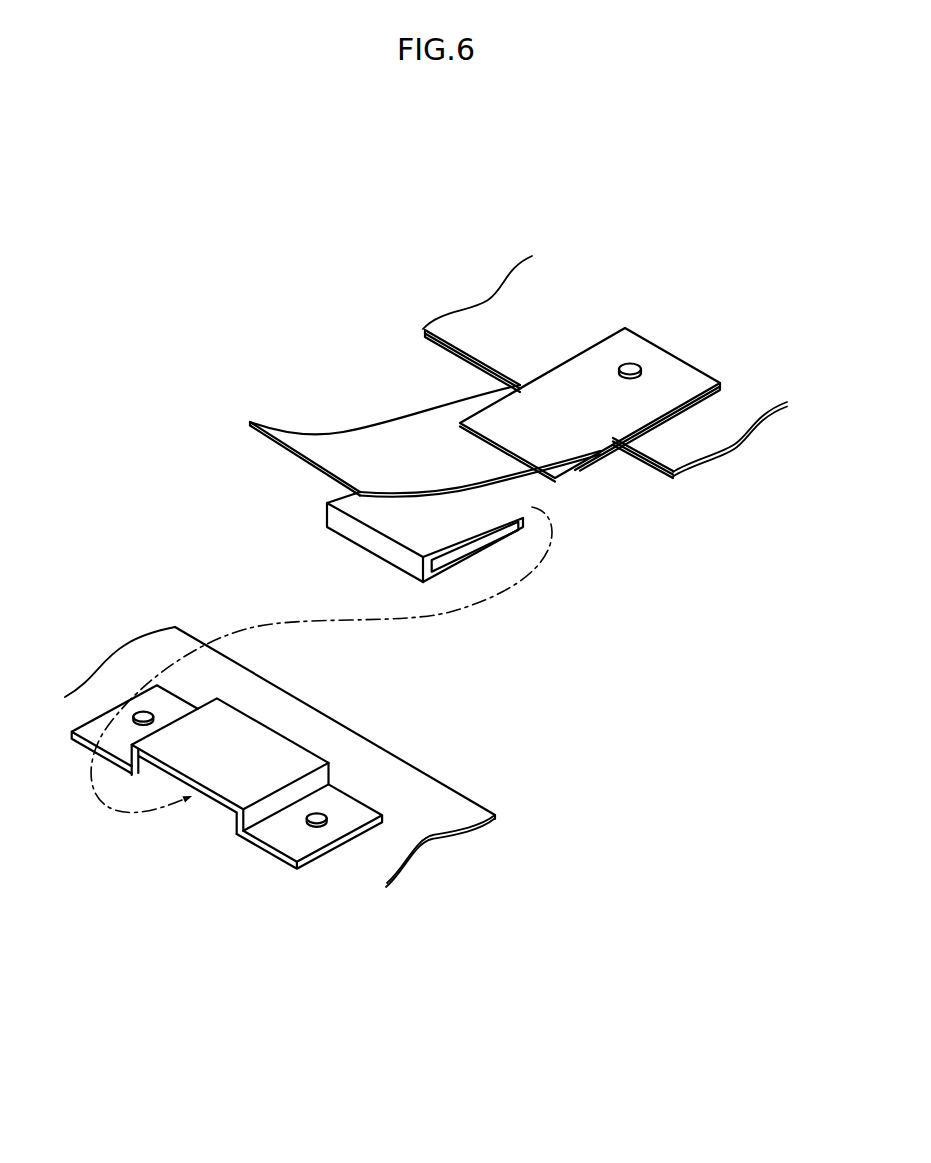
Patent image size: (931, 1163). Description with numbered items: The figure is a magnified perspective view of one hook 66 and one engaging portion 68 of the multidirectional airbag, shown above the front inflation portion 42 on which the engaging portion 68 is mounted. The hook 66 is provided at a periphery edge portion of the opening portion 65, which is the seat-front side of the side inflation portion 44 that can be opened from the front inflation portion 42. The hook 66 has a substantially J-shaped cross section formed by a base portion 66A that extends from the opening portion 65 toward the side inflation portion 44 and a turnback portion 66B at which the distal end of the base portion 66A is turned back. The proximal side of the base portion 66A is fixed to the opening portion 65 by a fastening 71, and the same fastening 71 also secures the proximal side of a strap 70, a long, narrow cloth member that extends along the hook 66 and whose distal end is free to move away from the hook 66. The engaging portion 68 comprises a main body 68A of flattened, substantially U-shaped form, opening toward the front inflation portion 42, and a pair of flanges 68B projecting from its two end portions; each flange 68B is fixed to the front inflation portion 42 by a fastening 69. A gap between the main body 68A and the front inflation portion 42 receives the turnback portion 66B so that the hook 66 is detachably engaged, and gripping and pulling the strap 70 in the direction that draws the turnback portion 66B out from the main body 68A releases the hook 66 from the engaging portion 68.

The front inflation portion 42 is at (420, 820).
The side inflation portion 44 is at (692, 437).
The opening portion 65 is at (607, 406).
The hook 66 is at (523, 450).
The base portion 66A is at (577, 473).
The turnback portion 66B is at (492, 548).
The engaging portion 68 is at (290, 768).
The main body 68A is at (276, 731).
The flange 68B is at (178, 696).
The fastening 69 is at (142, 711).
The strap 70 is at (343, 430).
The fastening 71 is at (633, 366).